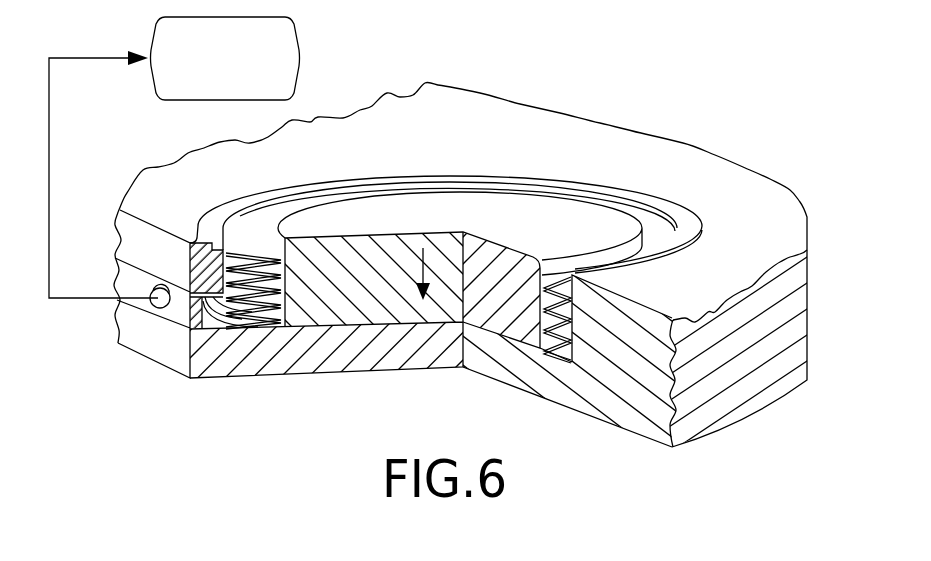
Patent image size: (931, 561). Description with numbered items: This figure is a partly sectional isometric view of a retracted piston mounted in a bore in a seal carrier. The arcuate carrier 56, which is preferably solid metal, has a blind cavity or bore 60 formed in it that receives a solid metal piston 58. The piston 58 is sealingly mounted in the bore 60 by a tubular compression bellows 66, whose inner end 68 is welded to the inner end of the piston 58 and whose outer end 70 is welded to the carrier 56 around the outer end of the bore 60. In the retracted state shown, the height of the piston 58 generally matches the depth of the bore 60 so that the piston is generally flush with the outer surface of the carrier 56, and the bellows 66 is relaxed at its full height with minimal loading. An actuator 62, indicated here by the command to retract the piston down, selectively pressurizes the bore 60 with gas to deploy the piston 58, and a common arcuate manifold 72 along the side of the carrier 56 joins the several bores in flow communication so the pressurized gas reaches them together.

The arcuate carrier 56 is at (438, 85).
The piston 58 is at (428, 213).
The bore 60 is at (378, 305).
The actuator 62 is at (300, 50).
The tubular bellows 66 is at (266, 297).
The inner end 68 is at (287, 328).
The outer end 70 is at (228, 208).
The manifold 72 is at (212, 317).